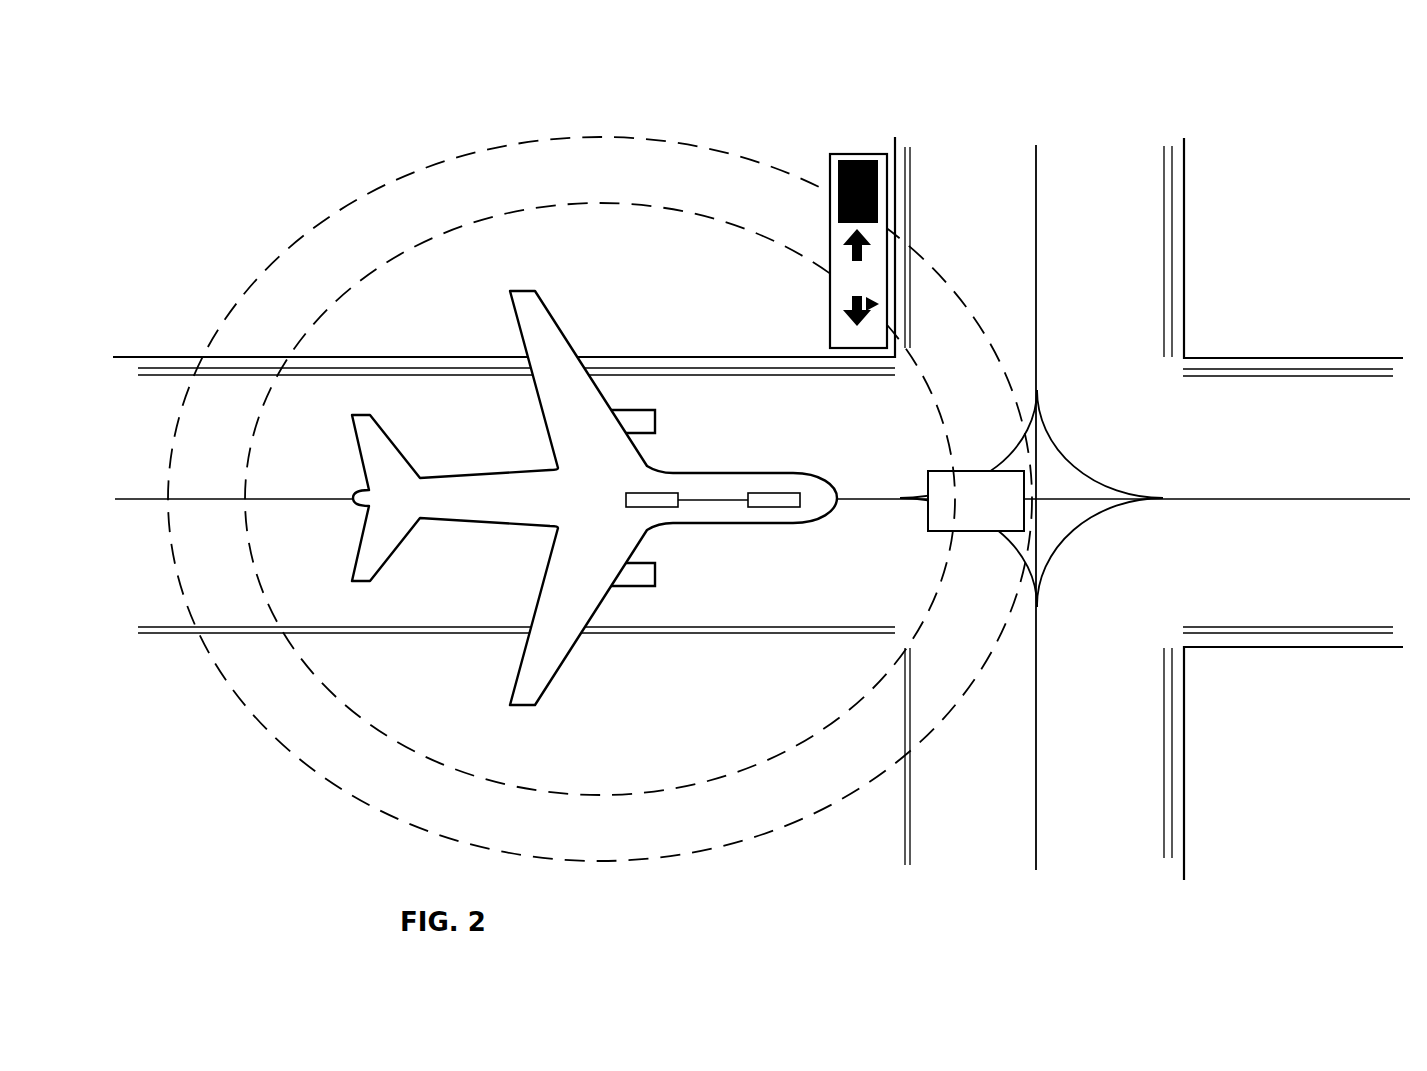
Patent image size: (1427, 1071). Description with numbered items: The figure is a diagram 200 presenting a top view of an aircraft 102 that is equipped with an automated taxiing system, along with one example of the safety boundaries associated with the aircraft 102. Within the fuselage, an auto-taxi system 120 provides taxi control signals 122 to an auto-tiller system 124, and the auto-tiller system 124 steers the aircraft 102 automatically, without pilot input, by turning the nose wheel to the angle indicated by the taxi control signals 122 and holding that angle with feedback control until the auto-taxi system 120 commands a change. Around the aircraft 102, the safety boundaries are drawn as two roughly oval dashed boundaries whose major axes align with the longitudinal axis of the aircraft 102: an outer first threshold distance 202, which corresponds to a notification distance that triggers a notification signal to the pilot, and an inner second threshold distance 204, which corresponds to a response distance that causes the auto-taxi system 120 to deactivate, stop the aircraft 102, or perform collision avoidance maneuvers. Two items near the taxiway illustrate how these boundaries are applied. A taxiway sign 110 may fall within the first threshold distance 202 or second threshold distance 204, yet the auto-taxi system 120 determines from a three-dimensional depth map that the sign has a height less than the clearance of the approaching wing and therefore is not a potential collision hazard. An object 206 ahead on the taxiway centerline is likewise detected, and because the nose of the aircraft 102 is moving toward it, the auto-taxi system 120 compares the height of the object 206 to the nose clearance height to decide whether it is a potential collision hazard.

The diagram 200 is at (1348, 72).
The first threshold distance 202 is at (649, 137).
The second threshold distance 204 is at (641, 203).
The taxiway sign 110 is at (830, 206).
The aircraft 102 is at (697, 473).
The auto-taxi system 120 is at (650, 493).
The taxi control signals 122 is at (687, 500).
The auto-tiller system 124 is at (768, 507).
The object 206 is at (928, 522).